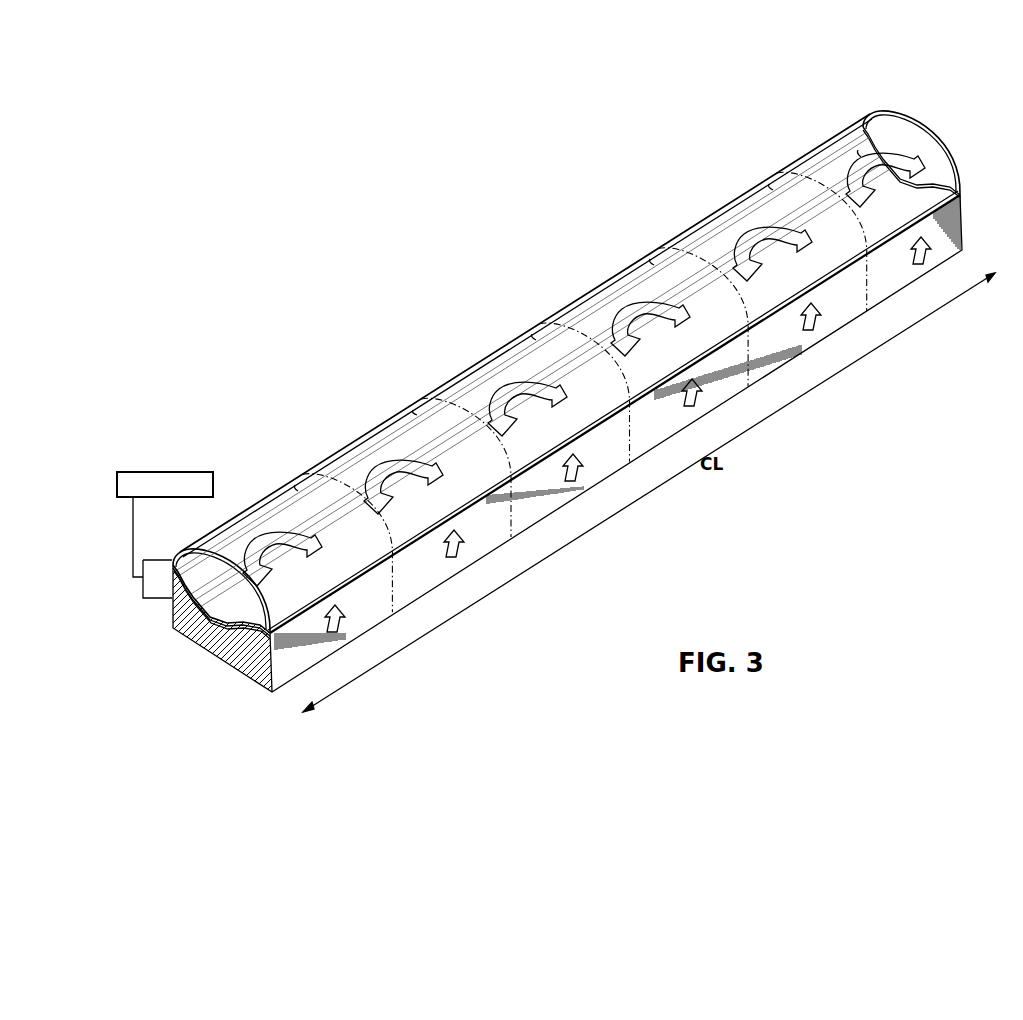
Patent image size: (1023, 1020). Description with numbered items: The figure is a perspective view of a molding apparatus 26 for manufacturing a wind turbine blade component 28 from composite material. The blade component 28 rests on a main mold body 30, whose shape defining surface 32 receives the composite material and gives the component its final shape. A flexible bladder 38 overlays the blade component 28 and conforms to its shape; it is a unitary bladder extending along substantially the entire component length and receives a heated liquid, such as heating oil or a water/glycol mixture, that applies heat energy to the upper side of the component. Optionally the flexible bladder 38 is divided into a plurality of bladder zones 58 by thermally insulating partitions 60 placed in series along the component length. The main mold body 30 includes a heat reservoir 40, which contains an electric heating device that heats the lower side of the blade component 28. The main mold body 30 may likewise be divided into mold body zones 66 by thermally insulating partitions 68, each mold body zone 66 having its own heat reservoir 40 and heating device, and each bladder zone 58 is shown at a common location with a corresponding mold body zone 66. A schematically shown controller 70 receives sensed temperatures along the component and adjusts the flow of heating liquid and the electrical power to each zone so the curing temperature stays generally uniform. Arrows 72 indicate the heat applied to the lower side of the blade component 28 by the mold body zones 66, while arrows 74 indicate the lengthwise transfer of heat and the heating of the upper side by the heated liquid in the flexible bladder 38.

The molding apparatus 26 is at (268, 488).
The blade component 28 is at (212, 633).
The main mold body 30 is at (270, 689).
The shape defining surface 32 is at (228, 620).
The flexible bladder 38 is at (370, 432).
The heat reservoir 40 is at (172, 606).
The bladder zones 58 is at (294, 484).
The thermally insulating partitions 60 is at (335, 478).
The mold body zones 66 is at (331, 652).
The thermally insulating partitions 68 is at (391, 610).
The controller 70 is at (152, 472).
The arrows 72 is at (343, 612).
The arrows 74 is at (310, 552).